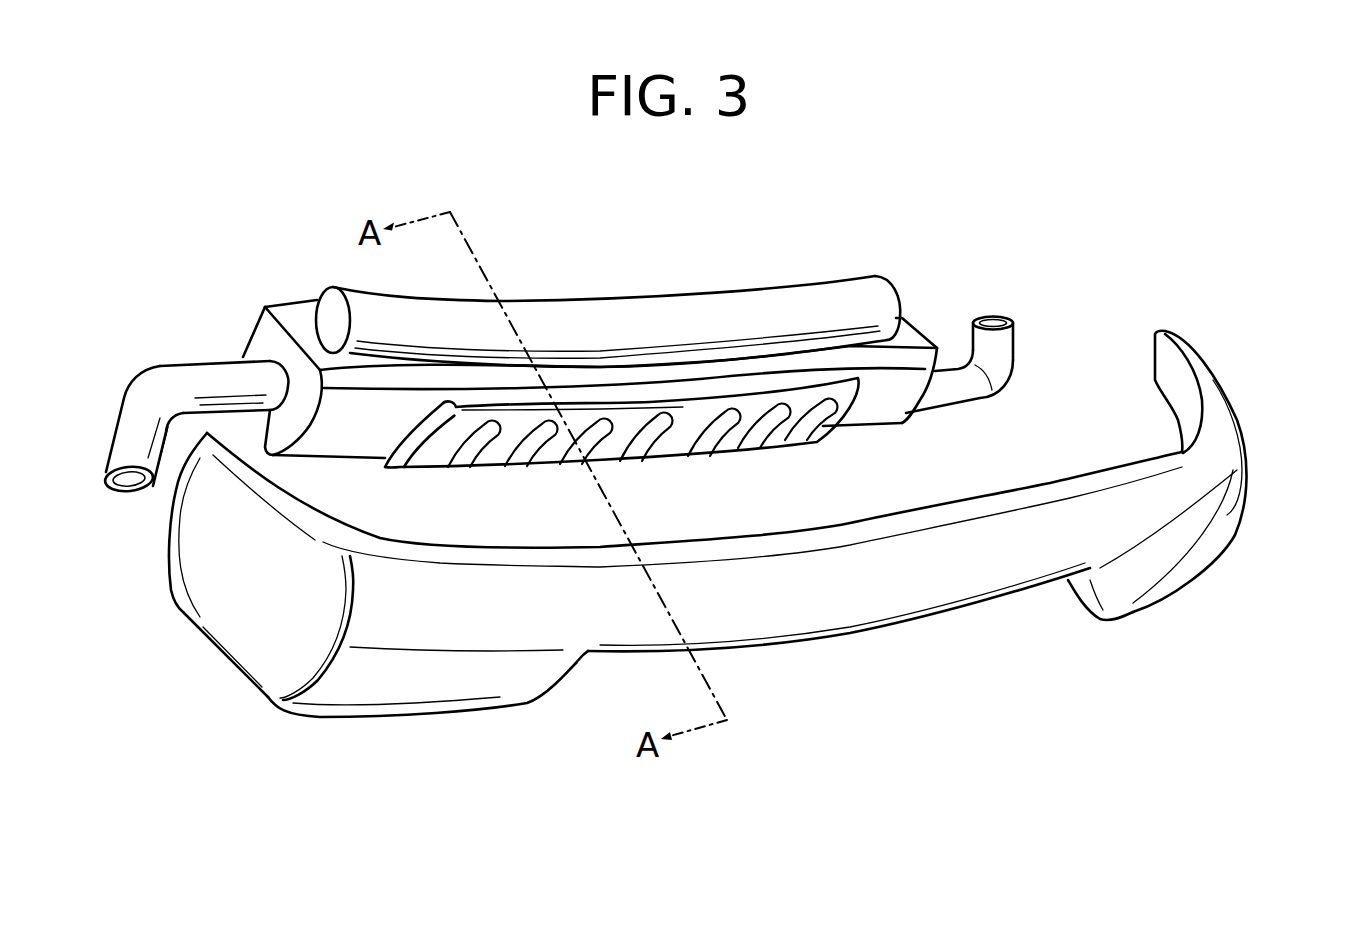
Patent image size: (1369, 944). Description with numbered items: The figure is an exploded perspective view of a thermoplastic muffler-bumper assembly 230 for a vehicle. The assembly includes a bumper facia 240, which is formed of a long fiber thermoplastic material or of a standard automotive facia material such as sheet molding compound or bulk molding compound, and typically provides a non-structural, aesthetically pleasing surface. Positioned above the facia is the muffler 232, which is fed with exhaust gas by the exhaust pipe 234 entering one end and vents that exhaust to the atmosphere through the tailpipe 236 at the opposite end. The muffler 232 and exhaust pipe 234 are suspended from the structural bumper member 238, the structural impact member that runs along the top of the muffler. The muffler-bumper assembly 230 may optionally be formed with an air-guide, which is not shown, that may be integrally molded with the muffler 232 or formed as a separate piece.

The muffler-bumper assembly 230 is at (925, 642).
The muffler 232 is at (880, 403).
The exhaust pipe 234 is at (1016, 346).
The tailpipe 236 is at (160, 378).
The structural bumper member 238 is at (788, 302).
The bumper facia 240 is at (1217, 455).